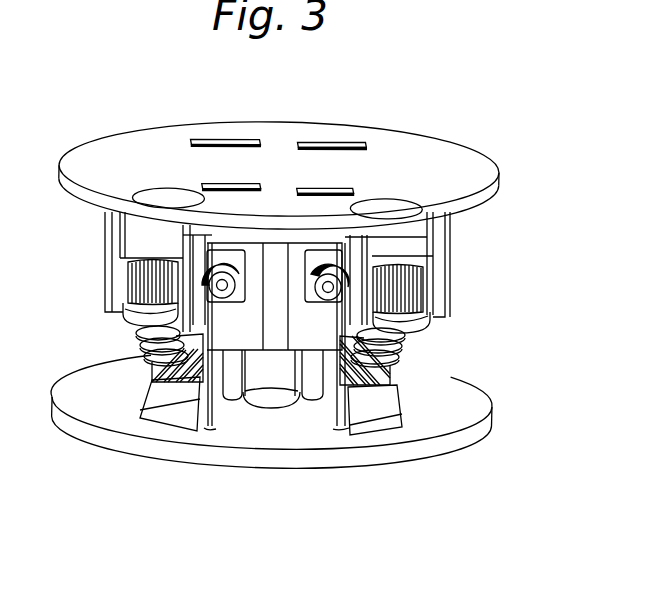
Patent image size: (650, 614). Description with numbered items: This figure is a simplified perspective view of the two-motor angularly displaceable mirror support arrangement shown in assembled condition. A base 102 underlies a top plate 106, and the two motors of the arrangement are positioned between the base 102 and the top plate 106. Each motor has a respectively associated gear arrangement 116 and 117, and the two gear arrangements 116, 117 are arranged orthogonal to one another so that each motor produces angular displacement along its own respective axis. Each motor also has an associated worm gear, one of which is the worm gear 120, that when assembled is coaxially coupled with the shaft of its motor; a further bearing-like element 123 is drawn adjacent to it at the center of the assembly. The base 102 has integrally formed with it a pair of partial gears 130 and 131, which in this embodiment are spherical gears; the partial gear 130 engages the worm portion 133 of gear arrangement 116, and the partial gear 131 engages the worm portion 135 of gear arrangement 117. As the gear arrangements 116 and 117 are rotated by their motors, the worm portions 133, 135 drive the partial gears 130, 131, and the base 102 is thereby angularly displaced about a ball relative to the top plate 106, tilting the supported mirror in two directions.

The base 102 is at (467, 395).
The top plate 106 is at (418, 163).
The gear arrangement 116 is at (129, 272).
The gear arrangement 117 is at (426, 272).
The worm gear 120 is at (224, 256).
The second bearing 123 is at (334, 258).
The partial gear 130 is at (162, 398).
The partial gear 131 is at (375, 405).
The worm portion 133 is at (141, 374).
The worm portion 135 is at (399, 341).